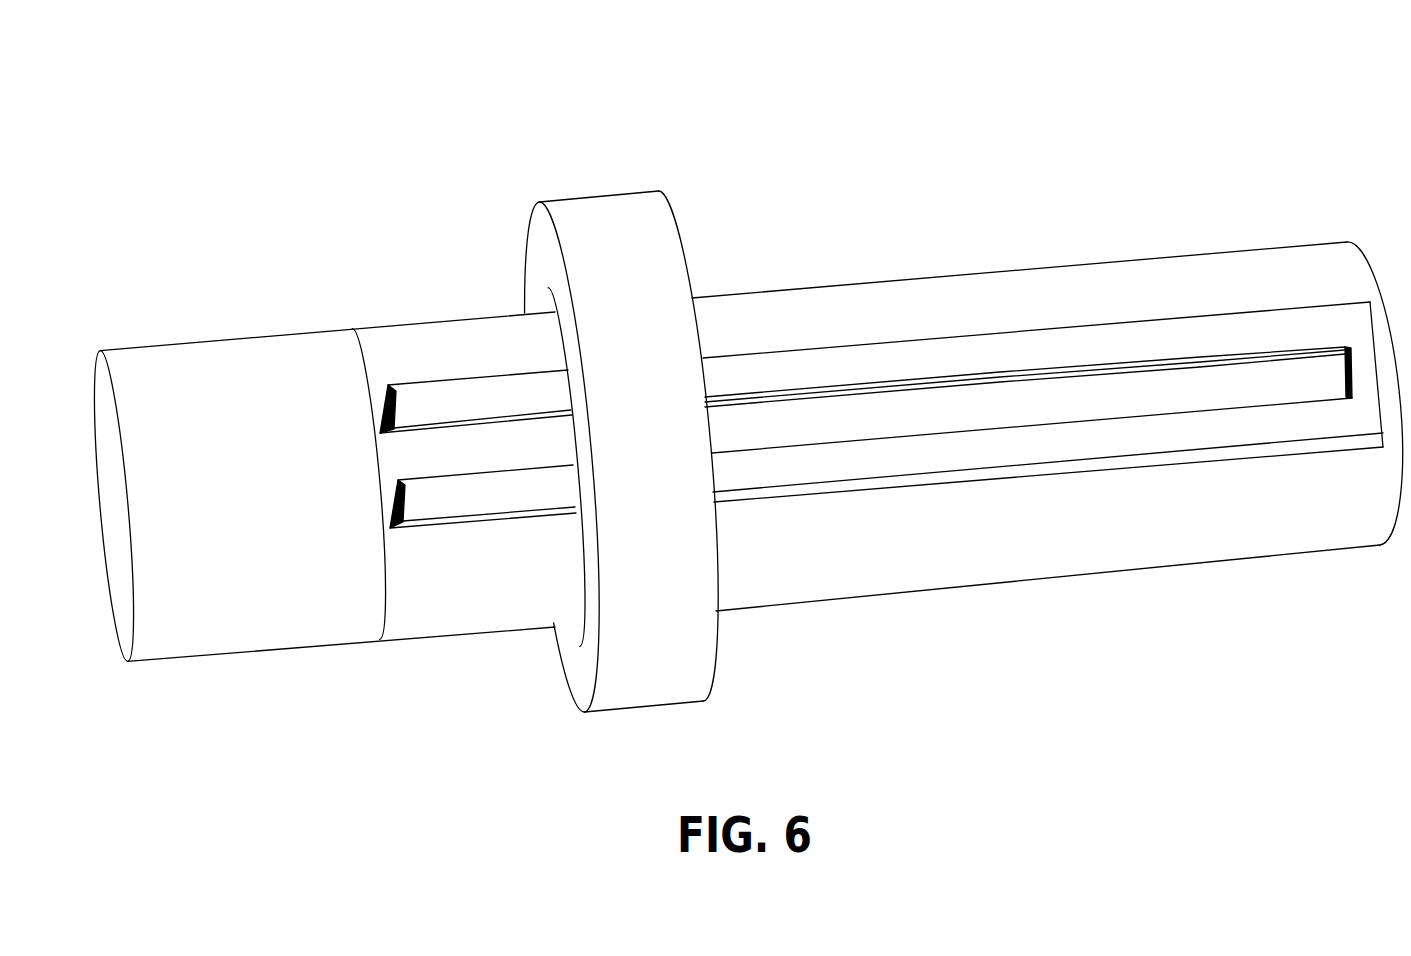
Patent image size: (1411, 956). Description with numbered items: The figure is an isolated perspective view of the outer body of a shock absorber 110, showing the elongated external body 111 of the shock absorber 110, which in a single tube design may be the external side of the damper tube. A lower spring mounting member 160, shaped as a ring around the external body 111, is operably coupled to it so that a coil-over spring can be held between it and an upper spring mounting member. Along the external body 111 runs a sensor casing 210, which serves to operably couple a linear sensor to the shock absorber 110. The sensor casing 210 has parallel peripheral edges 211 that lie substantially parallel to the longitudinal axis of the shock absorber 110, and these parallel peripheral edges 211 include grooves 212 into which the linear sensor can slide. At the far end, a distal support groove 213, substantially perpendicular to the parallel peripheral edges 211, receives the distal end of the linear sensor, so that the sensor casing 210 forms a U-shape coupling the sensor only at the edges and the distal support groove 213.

The shock absorber 110 is at (320, 73).
The external body 111 is at (1055, 520).
The lower spring mounting member 160 is at (662, 242).
The sensor casing 210 is at (434, 540).
The parallel peripheral edges 211 is at (888, 377).
The grooves 212 is at (385, 444).
The distal support groove 213 is at (1331, 362).